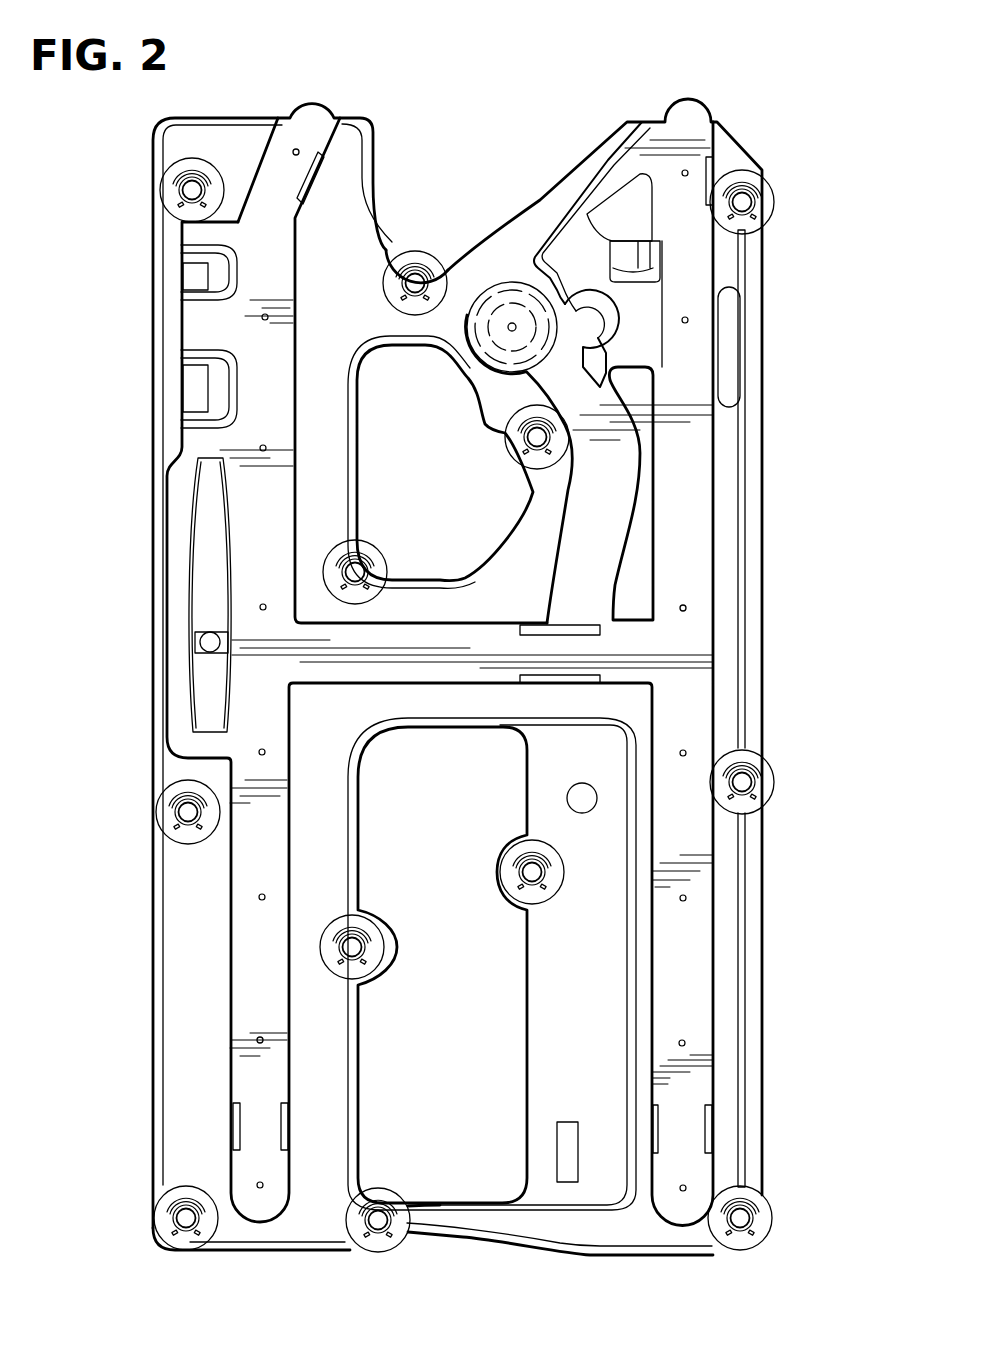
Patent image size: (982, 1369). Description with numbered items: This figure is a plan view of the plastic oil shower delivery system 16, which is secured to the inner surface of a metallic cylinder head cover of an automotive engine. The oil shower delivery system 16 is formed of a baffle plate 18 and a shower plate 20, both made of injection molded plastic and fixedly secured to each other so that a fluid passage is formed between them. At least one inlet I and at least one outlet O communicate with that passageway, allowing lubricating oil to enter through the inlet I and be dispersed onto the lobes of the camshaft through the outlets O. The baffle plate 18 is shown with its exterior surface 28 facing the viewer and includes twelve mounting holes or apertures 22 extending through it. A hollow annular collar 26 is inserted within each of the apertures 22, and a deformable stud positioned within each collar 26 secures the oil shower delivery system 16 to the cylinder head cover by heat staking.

The oil shower delivery system 16 is at (757, 103).
The baffle plate 18 is at (733, 518).
The shower plate 20 is at (300, 138).
The mounting holes or apertures 22 is at (189, 192).
The hollow annular collar 26 is at (172, 194).
The exterior surface 28 is at (478, 664).
The inlet I is at (513, 322).
The outlet O is at (687, 607).